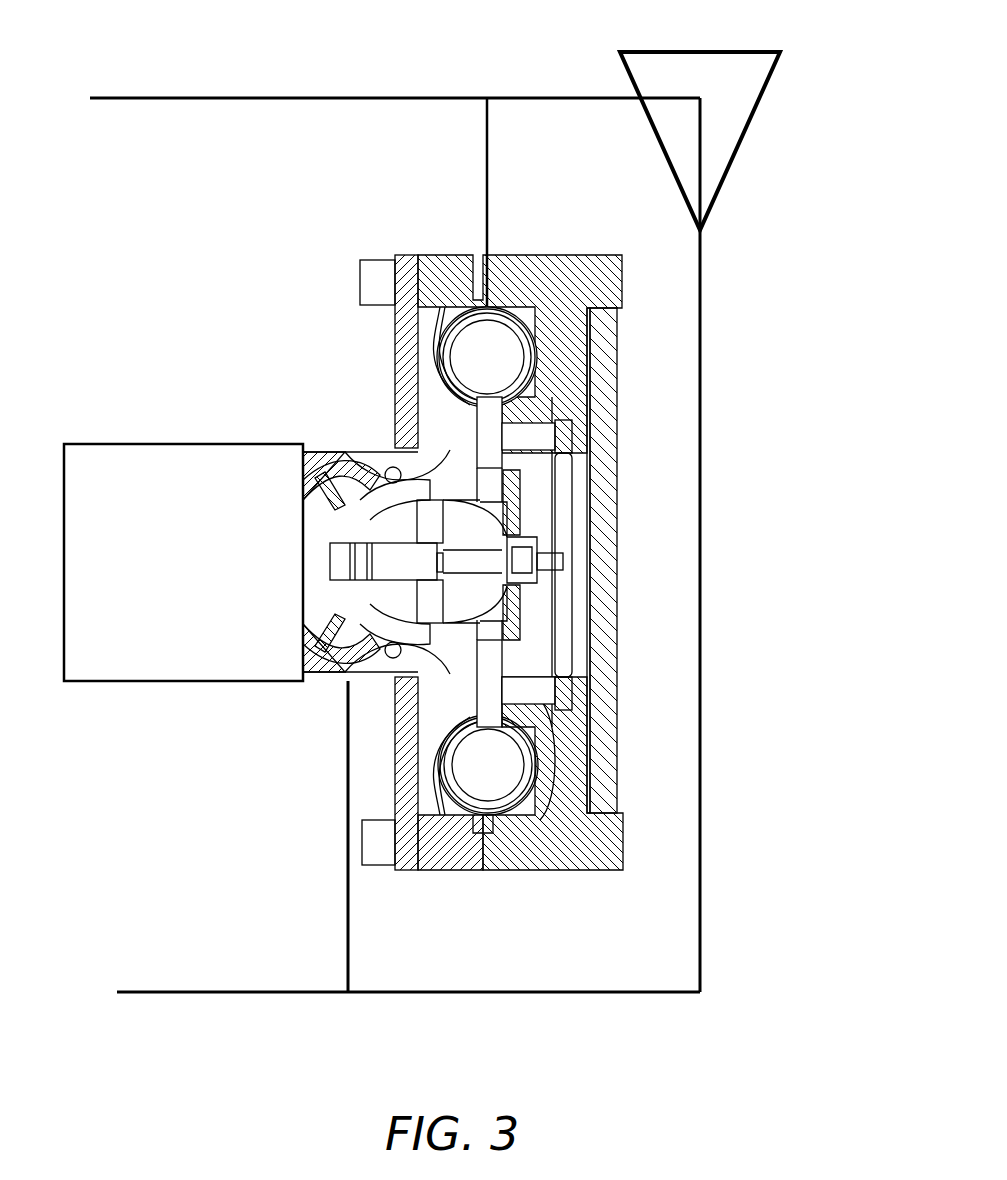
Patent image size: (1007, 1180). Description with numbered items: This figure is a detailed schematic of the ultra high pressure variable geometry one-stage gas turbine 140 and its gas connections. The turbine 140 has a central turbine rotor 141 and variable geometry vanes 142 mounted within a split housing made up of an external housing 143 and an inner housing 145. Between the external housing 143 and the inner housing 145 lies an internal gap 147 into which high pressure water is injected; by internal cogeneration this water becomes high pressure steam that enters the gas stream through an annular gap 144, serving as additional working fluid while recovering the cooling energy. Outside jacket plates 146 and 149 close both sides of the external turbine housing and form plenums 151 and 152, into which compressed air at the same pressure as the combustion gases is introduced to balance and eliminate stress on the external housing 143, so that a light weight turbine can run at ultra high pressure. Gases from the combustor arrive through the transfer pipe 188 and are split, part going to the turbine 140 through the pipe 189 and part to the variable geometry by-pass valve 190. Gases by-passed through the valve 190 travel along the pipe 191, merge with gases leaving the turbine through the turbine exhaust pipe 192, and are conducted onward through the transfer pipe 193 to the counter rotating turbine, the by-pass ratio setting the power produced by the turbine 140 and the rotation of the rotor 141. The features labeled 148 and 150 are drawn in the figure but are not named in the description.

The ultra high pressure variable geometry one-stage gas turbine 140 is at (240, 848).
The central turbine rotor 141 is at (455, 612).
The variable geometry vanes 142 is at (485, 678).
The external housing 143 is at (538, 855).
The annular gap 144 is at (560, 700).
The inner housing 145 is at (470, 808).
The outside jacket plate 146 is at (402, 762).
The internal gap 147 is at (546, 770).
The disk 148 is at (560, 630).
The outside jacket plate 149 is at (608, 730).
The housing 150 is at (360, 452).
The plenum 151 is at (570, 347).
The plenum 152 is at (425, 318).
The transfer pipe 188 is at (245, 96).
The pipe 189 is at (485, 188).
The variable geometry by-pass valve 190 is at (720, 115).
The pipe 191 is at (702, 500).
The turbine exhaust pipe 192 is at (347, 885).
The transfer pipe 193 is at (218, 990).